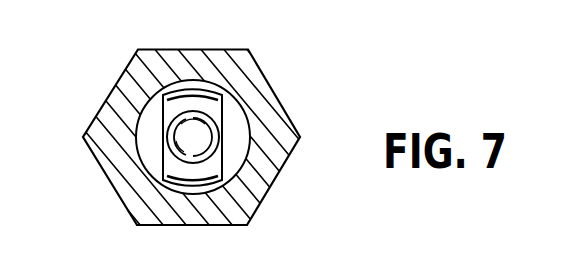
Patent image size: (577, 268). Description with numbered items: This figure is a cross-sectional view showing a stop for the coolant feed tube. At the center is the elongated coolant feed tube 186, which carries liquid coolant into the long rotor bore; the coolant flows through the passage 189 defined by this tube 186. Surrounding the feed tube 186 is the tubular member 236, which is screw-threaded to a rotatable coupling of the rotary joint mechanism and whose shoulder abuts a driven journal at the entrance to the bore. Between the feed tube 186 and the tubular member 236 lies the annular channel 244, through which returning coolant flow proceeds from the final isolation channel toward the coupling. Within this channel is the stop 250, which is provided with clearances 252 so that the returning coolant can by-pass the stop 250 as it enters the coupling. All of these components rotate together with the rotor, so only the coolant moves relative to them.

The tubular member 236 is at (267, 102).
The annular channel 244 is at (249, 156).
The clearances 252 is at (154, 113).
The stop 250 is at (210, 168).
The coolant feed tube 186 is at (178, 158).
The passage 189 is at (182, 156).